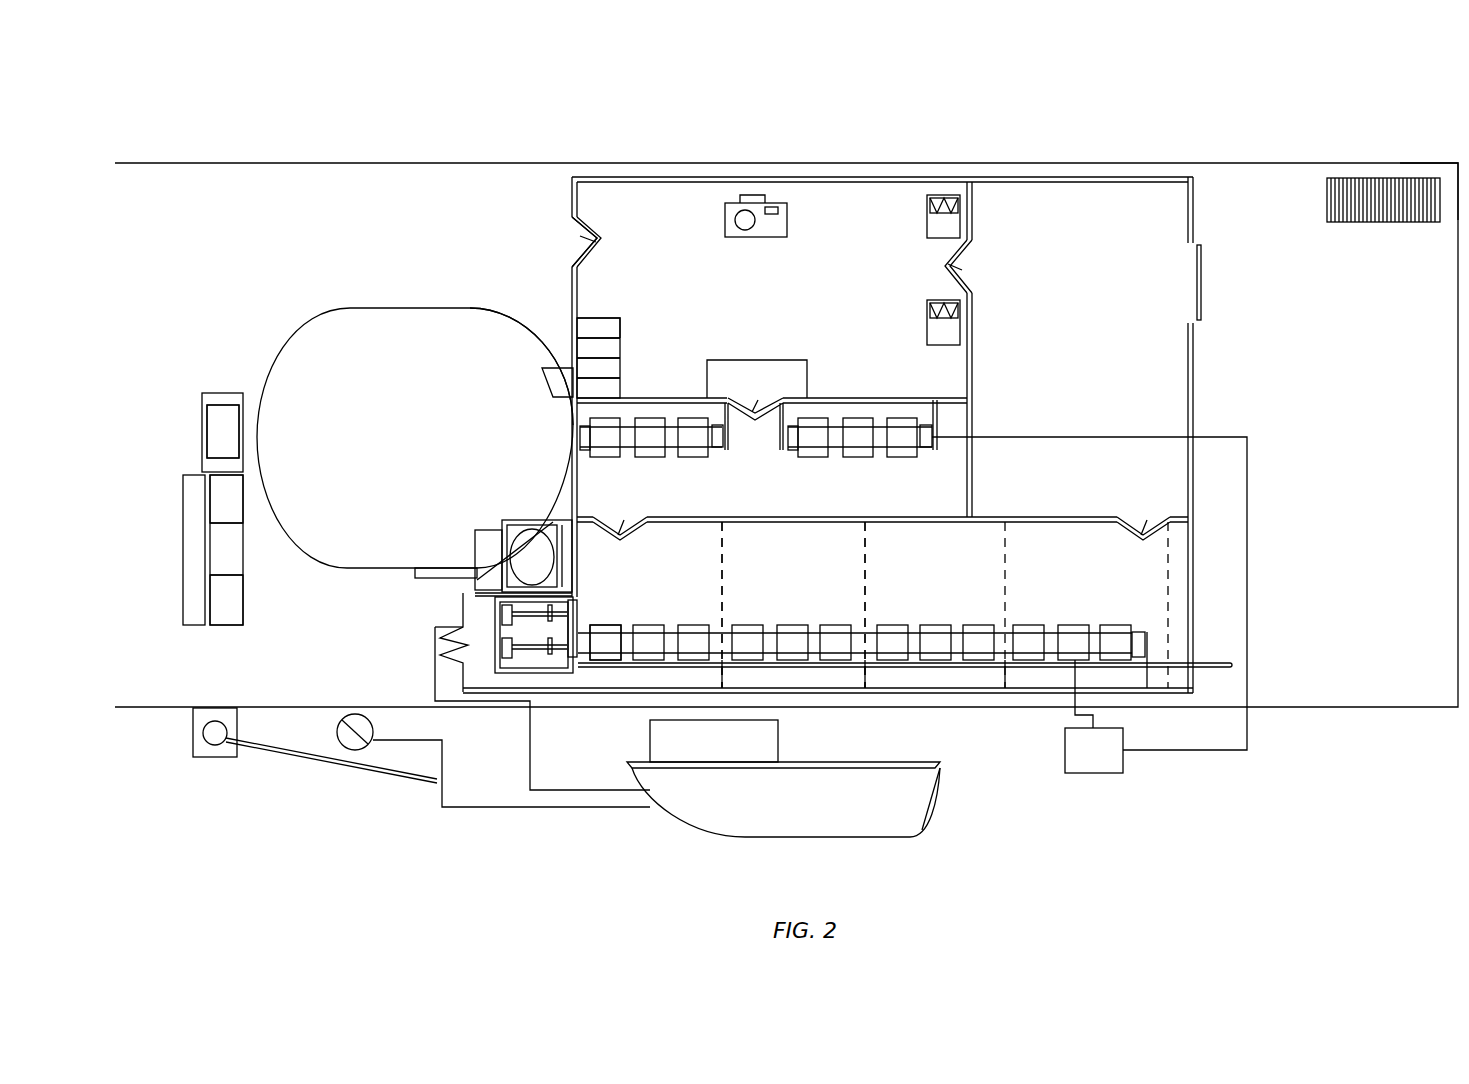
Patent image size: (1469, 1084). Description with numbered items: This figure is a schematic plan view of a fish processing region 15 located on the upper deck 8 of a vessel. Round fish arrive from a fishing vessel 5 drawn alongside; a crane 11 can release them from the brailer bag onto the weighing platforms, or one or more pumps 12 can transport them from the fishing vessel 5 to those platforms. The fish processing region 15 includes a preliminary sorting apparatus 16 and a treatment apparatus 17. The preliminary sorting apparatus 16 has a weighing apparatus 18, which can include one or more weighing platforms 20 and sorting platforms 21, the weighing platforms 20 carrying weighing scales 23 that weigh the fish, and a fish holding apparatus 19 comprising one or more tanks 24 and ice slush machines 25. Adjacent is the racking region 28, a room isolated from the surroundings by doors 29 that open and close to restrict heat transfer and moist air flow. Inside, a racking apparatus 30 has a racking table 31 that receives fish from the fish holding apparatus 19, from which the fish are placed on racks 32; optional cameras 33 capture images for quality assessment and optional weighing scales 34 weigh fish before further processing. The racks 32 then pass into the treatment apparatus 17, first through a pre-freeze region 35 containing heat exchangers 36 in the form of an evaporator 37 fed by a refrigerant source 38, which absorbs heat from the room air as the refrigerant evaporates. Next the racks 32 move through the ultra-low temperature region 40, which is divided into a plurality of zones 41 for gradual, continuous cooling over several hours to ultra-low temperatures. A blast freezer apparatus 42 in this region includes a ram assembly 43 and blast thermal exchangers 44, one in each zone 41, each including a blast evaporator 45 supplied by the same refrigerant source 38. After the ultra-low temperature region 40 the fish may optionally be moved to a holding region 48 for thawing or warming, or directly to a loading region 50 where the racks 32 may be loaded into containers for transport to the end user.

The fishing vessel 5 is at (918, 820).
The upper deck 8 is at (226, 245).
The crane 11 is at (190, 731).
The pump 12 is at (383, 721).
The fish processing region 15 is at (1433, 145).
The preliminary sorting apparatus 16 is at (195, 418).
The treatment apparatus 17 is at (1028, 455).
The weighing apparatus 18 is at (175, 505).
The fish holding apparatus 19 is at (360, 302).
The weighing platform 20 is at (237, 548).
The sorting platform 21 is at (228, 395).
The weighing scale 23 is at (237, 498).
The tank 24 is at (478, 312).
The ice slush machine 25 is at (470, 592).
The racking region 28 is at (835, 215).
The door 29 is at (592, 228).
The racking apparatus 30 is at (636, 316).
The racking table 31 is at (598, 322).
The rack 32 is at (612, 385).
The camera 33 is at (775, 203).
The weighing scale 34 is at (925, 312).
The pre-freeze region 35 is at (884, 410).
The heat exchanger 36 is at (735, 450).
The evaporator 37 is at (714, 450).
The refrigerant source 38 is at (1101, 785).
The ultra-low temperature region 40 is at (1075, 528).
The zone 41 is at (670, 558).
The blast freezer apparatus 42 is at (1141, 620).
The ram assembly 43 is at (515, 675).
The blast thermal exchanger 44 is at (716, 625).
The blast evaporator 45 is at (630, 658).
The holding region 48 is at (1107, 213).
The loading region 50 is at (1322, 398).